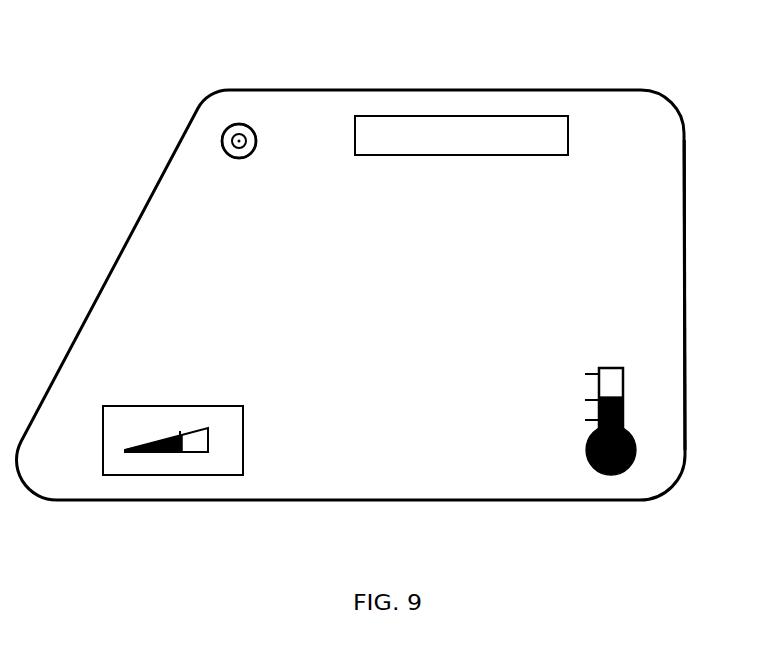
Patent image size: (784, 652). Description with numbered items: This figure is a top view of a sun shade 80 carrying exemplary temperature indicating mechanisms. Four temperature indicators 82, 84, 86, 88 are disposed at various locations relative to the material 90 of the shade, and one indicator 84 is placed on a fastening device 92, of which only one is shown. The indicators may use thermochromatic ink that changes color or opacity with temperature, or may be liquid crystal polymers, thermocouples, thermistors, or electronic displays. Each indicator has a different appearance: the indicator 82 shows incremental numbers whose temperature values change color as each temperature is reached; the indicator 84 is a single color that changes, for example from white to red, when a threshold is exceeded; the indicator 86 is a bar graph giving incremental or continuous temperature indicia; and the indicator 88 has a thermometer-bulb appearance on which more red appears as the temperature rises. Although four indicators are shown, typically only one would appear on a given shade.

The sun shade 80 is at (147, 197).
The temperature indicator 82 is at (438, 117).
The temperature indicator 84 is at (247, 124).
The temperature indicator 86 is at (152, 477).
The temperature indicator 88 is at (592, 468).
The material 90 is at (660, 238).
The fastening device 92 is at (220, 135).